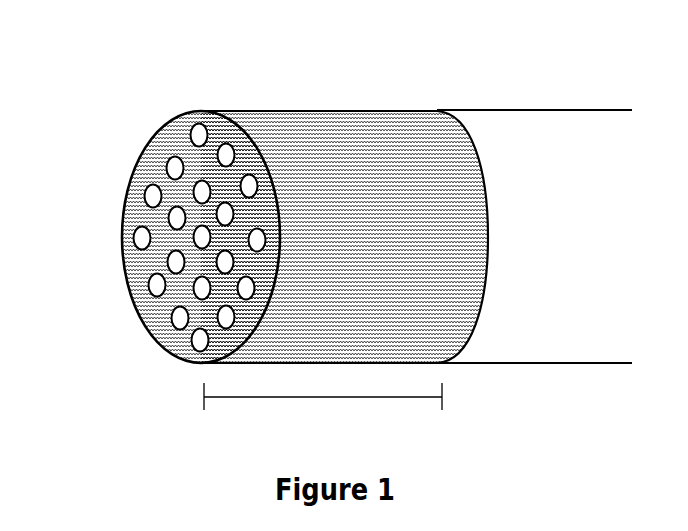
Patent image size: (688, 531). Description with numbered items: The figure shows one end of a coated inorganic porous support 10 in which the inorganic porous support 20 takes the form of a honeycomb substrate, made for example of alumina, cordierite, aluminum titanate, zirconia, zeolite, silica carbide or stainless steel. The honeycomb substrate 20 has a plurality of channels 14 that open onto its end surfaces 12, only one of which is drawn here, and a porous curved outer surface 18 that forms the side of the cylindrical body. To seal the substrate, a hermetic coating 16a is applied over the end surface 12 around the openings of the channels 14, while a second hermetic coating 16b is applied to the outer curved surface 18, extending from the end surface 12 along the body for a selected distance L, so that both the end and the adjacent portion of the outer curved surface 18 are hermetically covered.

The coated inorganic porous support 10 is at (117, 86).
The end surface 12 is at (144, 336).
The channels 14 is at (138, 243).
The hermetic coating 16a is at (170, 130).
The hermetic coating 16b is at (208, 110).
The porous curved outer surface 18 is at (531, 367).
The inorganic porous support 20 is at (519, 96).